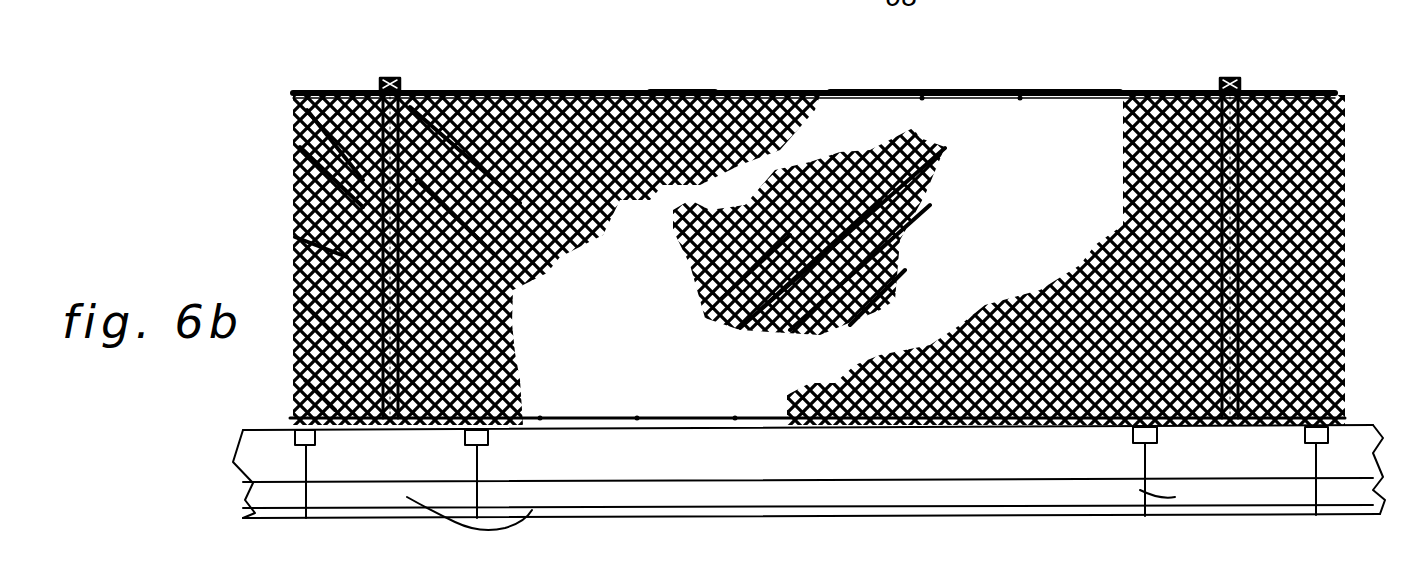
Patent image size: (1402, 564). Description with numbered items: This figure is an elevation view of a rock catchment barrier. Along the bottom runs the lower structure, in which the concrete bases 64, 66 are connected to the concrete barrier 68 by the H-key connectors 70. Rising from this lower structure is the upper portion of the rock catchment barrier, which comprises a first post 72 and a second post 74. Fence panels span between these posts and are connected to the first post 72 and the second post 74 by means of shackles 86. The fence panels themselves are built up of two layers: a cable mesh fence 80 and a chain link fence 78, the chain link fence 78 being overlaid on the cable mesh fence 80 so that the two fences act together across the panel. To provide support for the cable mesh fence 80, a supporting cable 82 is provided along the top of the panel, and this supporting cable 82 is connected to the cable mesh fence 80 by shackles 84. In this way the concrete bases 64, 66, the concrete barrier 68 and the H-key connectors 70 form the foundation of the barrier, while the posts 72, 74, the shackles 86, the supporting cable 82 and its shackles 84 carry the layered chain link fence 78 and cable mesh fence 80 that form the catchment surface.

The concrete base 64 is at (545, 497).
The concrete base 66 is at (1140, 490).
The concrete barrier 68 is at (710, 471).
The H-key connectors 70 is at (472, 446).
The first post 72 is at (388, 84).
The second post 74 is at (1233, 74).
The chain link fence 78 is at (423, 90).
The cable mesh fence 80 is at (587, 90).
The supporting cable 82 is at (953, 88).
The shackles 84 is at (707, 90).
The shackles 86 is at (405, 88).